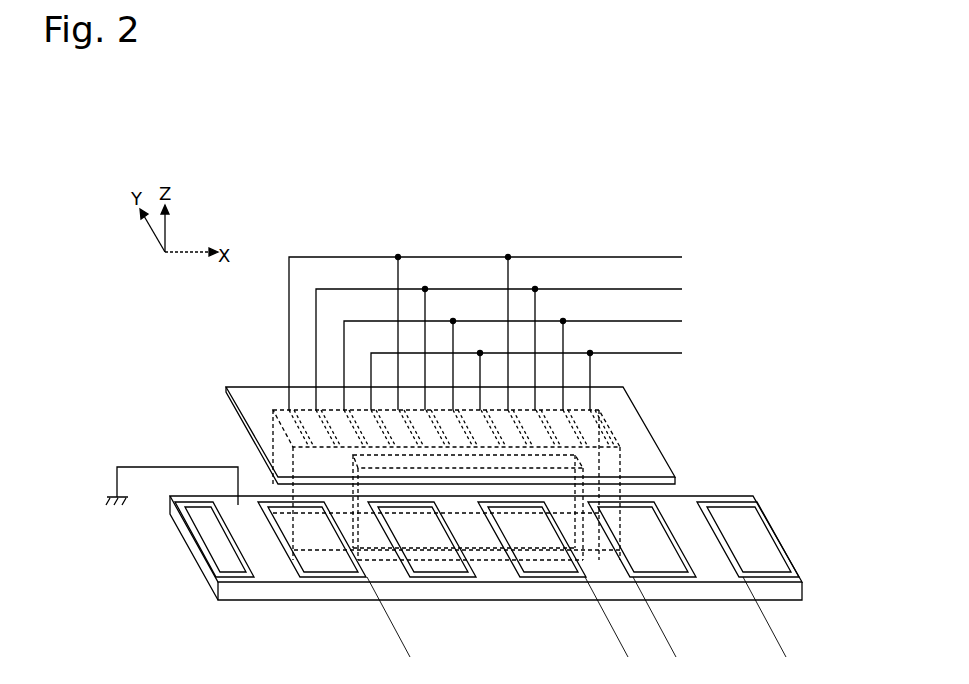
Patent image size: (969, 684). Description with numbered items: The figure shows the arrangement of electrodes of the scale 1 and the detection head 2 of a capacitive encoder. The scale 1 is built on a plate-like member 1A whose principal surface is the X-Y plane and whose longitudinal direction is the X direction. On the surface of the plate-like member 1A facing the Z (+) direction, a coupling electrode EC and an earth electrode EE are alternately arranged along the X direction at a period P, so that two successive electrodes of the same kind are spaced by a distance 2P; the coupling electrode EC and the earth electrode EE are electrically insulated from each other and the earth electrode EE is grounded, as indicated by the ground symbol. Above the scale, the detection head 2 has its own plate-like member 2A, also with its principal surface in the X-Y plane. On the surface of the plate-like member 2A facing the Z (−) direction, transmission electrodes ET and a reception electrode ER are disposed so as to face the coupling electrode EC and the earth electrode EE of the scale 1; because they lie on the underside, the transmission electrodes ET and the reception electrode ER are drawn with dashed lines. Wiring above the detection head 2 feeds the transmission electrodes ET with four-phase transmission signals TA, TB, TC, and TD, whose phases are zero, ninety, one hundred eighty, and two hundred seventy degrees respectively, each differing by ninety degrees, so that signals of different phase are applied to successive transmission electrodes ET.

The scale 1 is at (453, 576).
The plate-like member 1A is at (235, 595).
The detection head 2 is at (418, 405).
The plate-like member 2A is at (245, 390).
The earth electrode EE is at (275, 570).
The coupling electrode EC is at (332, 570).
The transmission electrode ET is at (613, 423).
The reception electrode ER is at (583, 460).
The transmission signal TA(0°) TA is at (648, 257).
The transmission signal TB(90°) TB is at (648, 289).
The transmission signal TC(180°) TC is at (648, 321).
The transmission signal TD(270°) TD is at (648, 353).
The twice electrode pitch 2P is at (620, 638).
The period P is at (775, 638).